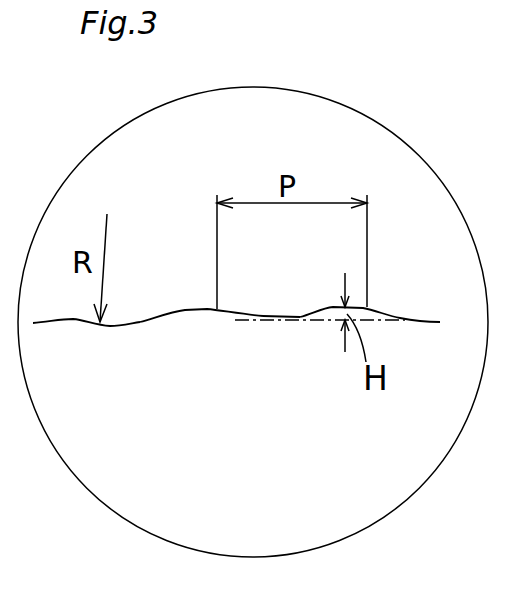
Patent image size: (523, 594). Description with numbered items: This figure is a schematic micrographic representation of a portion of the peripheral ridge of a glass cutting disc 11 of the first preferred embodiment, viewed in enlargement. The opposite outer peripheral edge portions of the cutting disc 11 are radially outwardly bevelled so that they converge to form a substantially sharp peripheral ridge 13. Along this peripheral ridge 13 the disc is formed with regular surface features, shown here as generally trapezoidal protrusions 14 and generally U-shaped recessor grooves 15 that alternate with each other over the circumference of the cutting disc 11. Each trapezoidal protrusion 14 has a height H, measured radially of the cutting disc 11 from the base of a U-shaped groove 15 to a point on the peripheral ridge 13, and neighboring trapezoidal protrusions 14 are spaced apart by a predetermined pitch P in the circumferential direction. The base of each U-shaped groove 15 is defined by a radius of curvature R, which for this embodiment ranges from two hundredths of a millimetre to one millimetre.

The glass cutting disc 11 is at (236, 292).
The peripheral ridge 13 is at (392, 316).
The trapezoidal protrusion 14 is at (200, 309).
The U-shaped recessor groove 15 is at (126, 320).